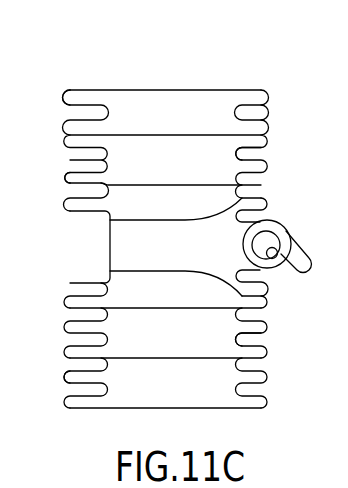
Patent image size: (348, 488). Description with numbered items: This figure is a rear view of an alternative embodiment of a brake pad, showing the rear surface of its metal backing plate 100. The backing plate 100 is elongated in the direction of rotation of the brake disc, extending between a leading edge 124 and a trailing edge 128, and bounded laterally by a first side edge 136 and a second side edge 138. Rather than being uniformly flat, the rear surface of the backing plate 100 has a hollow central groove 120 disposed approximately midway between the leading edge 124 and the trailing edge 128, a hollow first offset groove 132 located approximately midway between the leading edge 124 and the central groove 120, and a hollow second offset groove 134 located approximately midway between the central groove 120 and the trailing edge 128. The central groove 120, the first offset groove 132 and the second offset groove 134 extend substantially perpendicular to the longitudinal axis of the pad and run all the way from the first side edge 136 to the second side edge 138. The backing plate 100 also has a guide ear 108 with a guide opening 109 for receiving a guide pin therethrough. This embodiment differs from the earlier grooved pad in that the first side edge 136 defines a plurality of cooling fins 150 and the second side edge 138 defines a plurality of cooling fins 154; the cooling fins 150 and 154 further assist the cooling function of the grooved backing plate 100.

The metal backing plate 100 is at (114, 96).
The trailing edge 128 is at (106, 100).
The first side edge 136 is at (46, 100).
The second side edge 138 is at (300, 111).
The second offset groove 134 is at (117, 156).
The cooling fins 150 is at (65, 196).
The cooling fins 154 is at (263, 160).
The guide ear 108 is at (290, 218).
The guide opening 109 is at (277, 258).
The central groove 120 is at (130, 250).
The first offset groove 132 is at (118, 338).
The leading edge 124 is at (118, 409).